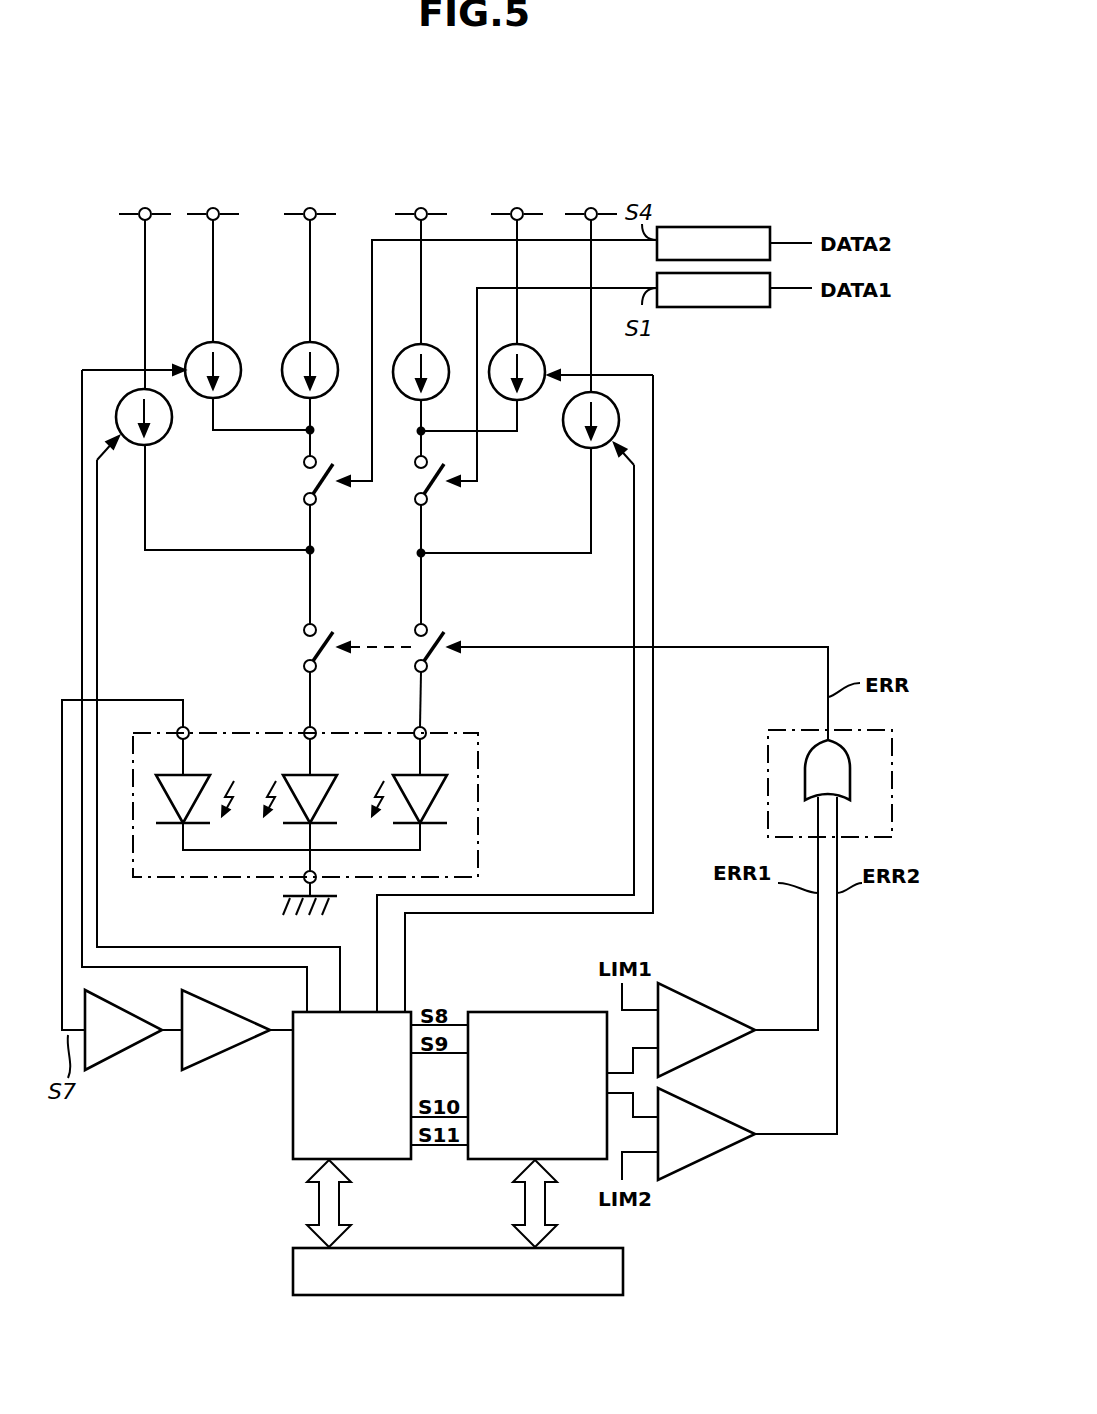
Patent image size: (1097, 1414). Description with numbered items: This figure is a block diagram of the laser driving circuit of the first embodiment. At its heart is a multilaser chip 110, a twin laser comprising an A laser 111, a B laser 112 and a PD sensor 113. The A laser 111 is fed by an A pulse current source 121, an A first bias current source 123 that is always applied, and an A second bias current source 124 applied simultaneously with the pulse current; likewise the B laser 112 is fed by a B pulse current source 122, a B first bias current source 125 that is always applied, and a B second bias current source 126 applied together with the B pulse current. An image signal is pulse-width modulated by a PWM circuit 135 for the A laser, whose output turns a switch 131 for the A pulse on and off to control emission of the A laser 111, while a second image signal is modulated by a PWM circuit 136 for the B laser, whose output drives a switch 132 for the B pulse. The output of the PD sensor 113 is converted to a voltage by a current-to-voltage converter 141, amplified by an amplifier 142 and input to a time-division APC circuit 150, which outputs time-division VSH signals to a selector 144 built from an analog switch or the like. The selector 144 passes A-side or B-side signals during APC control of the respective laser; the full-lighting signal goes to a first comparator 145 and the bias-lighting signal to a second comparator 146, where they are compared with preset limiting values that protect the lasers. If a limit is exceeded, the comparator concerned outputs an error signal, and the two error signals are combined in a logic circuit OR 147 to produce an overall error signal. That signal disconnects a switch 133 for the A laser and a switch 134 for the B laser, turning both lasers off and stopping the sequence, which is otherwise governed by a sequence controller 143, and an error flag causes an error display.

The multilaser chip 110 is at (478, 830).
The A laser 111 is at (440, 777).
The B laser 112 is at (328, 773).
The PD sensor 113 is at (197, 773).
The A pulse current source 121 is at (440, 346).
The B pulse current source 122 is at (300, 343).
The A first bias current source 123 is at (617, 410).
The A second bias current source 124 is at (510, 346).
The B first bias current source 125 is at (125, 392).
The B second bias current source 126 is at (205, 343).
The switch for A pulse 131 is at (437, 473).
The switch for B pulse 132 is at (327, 493).
The switch for A laser 133 is at (438, 633).
The switch for B laser 134 is at (323, 660).
The PWM circuit for A laser 135 is at (672, 307).
The PWM circuit for B laser 136 is at (703, 227).
The current-to-voltage converter 141 is at (112, 1055).
The amplifier 142 is at (212, 1055).
The sequence controller 143 is at (293, 1270).
The selector 144 is at (537, 1012).
The first comparator 145 is at (708, 1010).
The second comparator 146 is at (722, 1150).
The logic circuit OR 147 is at (812, 730).
The time-division APC circuit 150 is at (370, 1160).